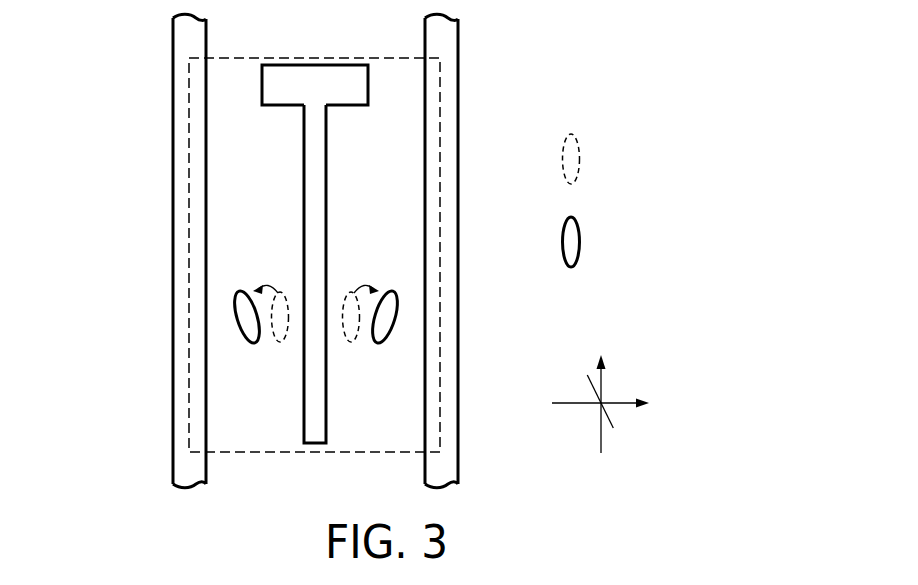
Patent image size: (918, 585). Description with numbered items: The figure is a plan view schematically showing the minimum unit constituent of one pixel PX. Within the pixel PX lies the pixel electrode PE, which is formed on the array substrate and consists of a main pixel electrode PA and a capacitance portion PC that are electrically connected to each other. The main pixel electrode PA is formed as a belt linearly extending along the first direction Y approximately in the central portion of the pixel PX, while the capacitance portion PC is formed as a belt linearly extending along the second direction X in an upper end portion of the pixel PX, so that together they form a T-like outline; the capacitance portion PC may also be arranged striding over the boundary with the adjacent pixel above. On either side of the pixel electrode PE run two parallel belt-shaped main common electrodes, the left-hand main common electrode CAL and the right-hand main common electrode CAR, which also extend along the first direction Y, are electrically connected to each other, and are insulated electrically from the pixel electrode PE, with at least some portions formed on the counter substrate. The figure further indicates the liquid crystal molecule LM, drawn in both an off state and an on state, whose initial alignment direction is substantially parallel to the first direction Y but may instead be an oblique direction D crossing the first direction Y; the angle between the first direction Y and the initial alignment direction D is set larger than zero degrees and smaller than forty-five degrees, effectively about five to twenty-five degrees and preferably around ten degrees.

The left-hand main common electrode CAL is at (173, 101).
The right-hand main common electrode CAR is at (458, 102).
The pixel PX is at (382, 57).
The pixel electrode PE is at (319, 230).
The capacitance portion PC is at (275, 105).
The main pixel electrode PA is at (326, 134).
The liquid crystal molecule LM is at (530, 240).
The second direction X is at (679, 415).
The first direction Y is at (706, 394).
The initial alignment direction D is at (582, 384).